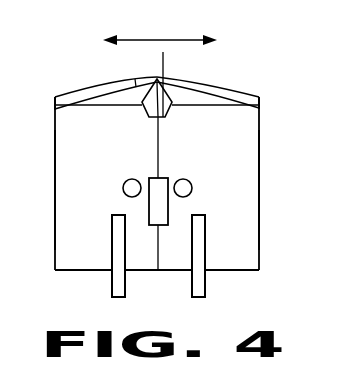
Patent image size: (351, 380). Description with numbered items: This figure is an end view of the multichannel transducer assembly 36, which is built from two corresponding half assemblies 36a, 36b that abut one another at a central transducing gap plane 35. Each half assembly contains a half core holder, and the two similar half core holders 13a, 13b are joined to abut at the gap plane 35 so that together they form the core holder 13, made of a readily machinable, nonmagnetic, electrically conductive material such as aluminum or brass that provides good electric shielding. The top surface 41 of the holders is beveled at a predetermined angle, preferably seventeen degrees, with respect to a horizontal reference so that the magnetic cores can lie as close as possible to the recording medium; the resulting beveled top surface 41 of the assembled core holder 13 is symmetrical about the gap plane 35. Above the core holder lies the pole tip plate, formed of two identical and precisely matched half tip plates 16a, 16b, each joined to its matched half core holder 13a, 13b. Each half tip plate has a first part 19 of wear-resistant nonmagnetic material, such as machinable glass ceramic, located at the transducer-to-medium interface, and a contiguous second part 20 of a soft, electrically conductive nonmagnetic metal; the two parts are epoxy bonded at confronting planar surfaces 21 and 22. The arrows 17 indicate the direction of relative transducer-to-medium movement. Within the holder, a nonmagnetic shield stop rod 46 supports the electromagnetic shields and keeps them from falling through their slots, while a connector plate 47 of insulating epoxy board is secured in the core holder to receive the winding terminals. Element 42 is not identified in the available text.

The core holder 13 is at (260, 159).
The half core holder 13a is at (215, 157).
The half core holder 13b is at (112, 157).
The half tip plate 16a is at (261, 103).
The half tip plate 16b is at (56, 106).
The arrows indicating relative transducer-to-medium movement 17 is at (158, 39).
The first part of tip plate 19 is at (148, 78).
The second part of tip plate 20 is at (85, 91).
The confronting planar surface 21 is at (178, 80).
The confronting planar surface 22 is at (179, 88).
The transducing gap plane 35 is at (152, 120).
The multichannel transducer assembly 36 is at (276, 73).
The half assembly 36a is at (63, 224).
The half assembly 36b is at (255, 225).
The beveled top surface 41 is at (113, 93).
The bottom wall 42 is at (265, 195).
The shield stop rod 46 is at (192, 186).
The connector plate 47 is at (200, 243).